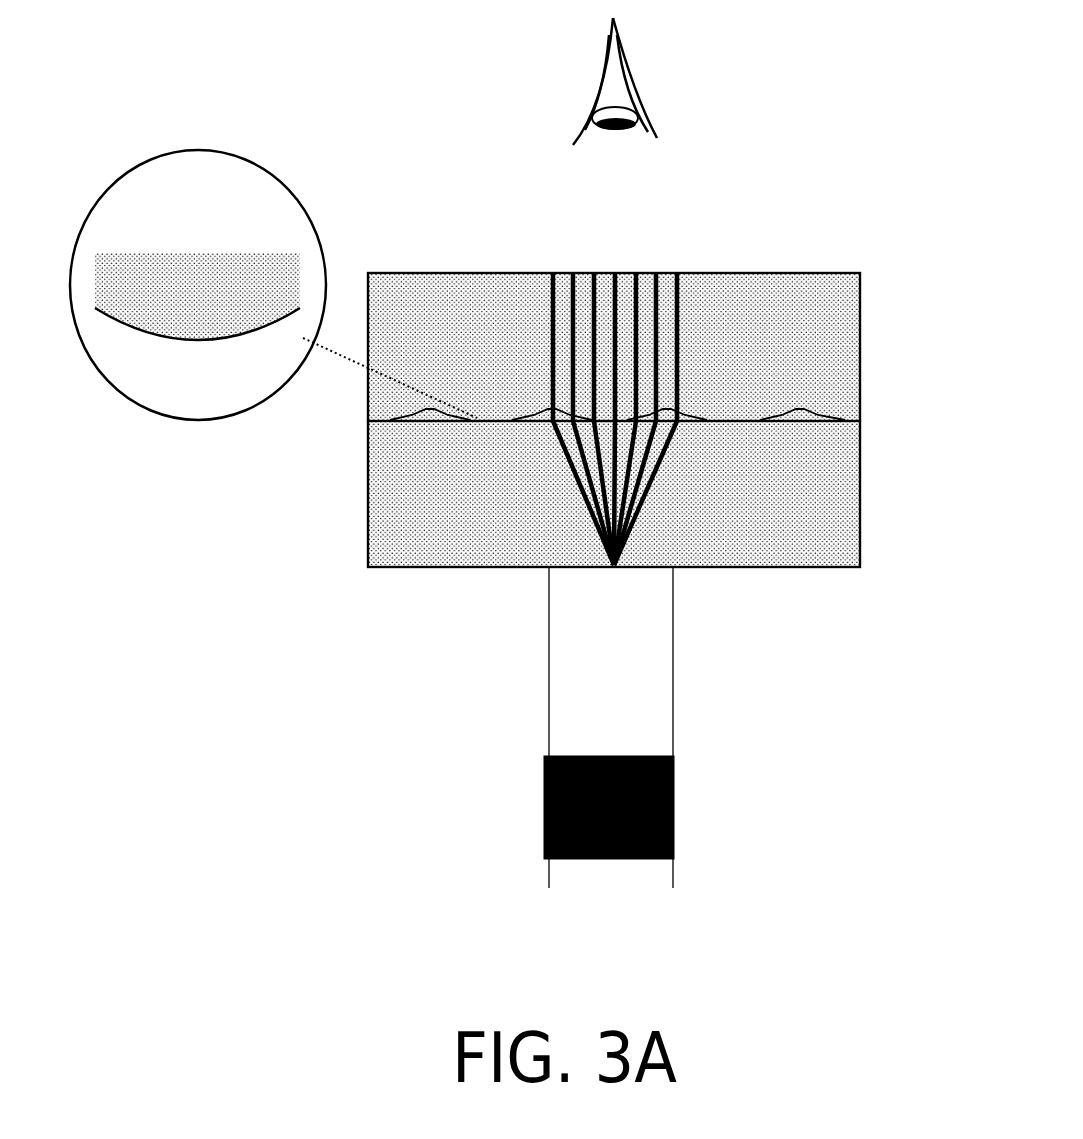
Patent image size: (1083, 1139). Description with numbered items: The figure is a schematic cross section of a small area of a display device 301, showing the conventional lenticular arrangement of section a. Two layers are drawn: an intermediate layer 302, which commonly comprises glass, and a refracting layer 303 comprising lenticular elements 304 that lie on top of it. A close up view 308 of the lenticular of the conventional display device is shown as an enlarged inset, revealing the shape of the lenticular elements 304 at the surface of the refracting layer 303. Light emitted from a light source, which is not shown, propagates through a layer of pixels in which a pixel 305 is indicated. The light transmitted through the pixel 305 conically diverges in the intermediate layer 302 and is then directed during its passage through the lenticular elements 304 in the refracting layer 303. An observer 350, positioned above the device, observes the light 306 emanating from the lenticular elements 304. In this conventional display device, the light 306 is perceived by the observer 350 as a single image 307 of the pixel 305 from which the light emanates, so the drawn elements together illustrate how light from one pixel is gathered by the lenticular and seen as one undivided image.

The display device 301 is at (811, 223).
The intermediate layer 302 is at (897, 430).
The refracting layer 303 is at (897, 274).
The lenticular elements 304 is at (757, 284).
The pixel 305 is at (614, 568).
The light 306 is at (655, 380).
The single image 307 is at (545, 805).
The close up view 308 is at (198, 148).
The observer 350 is at (635, 84).